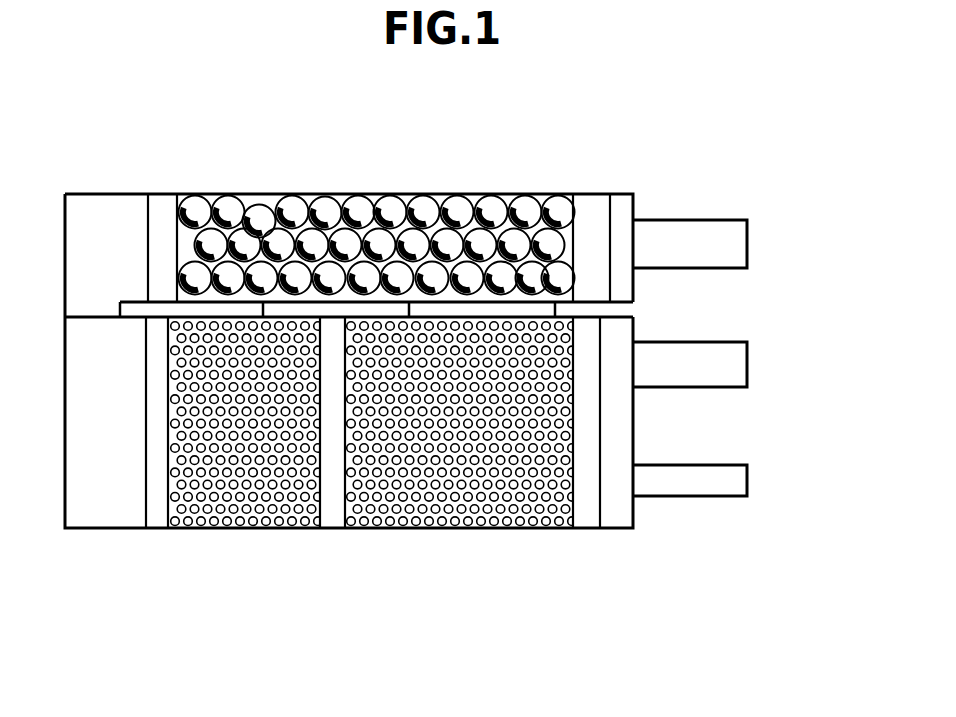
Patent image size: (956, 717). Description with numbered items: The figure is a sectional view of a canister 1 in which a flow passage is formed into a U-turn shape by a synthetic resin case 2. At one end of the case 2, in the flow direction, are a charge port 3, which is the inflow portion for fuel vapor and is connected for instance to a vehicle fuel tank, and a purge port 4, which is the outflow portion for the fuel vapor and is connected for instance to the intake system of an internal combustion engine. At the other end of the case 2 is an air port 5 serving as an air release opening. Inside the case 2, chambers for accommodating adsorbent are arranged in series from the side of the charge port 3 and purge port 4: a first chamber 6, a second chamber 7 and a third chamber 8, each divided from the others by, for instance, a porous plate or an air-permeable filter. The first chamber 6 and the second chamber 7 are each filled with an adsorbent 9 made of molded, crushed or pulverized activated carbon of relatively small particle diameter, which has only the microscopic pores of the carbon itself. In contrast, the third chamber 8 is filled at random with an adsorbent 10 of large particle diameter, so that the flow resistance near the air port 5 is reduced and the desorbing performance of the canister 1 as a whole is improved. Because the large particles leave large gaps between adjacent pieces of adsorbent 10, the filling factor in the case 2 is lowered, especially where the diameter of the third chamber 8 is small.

The canister 1 is at (664, 166).
The synthetic resin case 2 is at (260, 196).
The charge port 3 is at (733, 358).
The purge port 4 is at (733, 482).
The air port 5 is at (737, 240).
The first chamber 6 is at (496, 526).
The second chamber 7 is at (243, 528).
The third chamber 8 is at (425, 204).
The adsorbent 9 is at (222, 483).
The adsorbent 10 is at (514, 212).